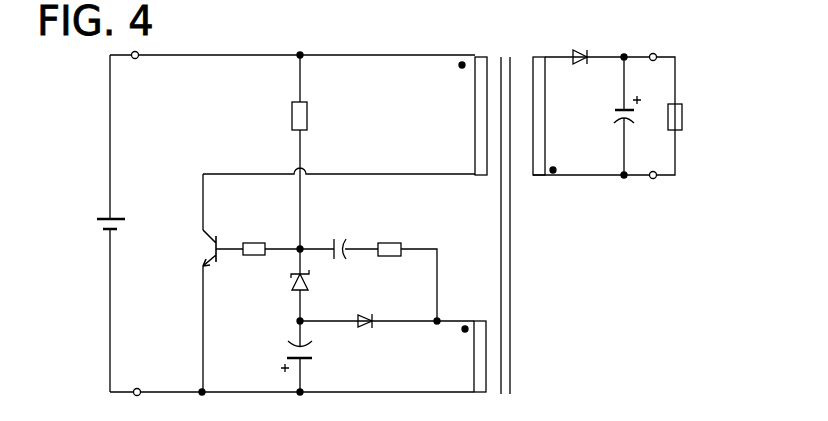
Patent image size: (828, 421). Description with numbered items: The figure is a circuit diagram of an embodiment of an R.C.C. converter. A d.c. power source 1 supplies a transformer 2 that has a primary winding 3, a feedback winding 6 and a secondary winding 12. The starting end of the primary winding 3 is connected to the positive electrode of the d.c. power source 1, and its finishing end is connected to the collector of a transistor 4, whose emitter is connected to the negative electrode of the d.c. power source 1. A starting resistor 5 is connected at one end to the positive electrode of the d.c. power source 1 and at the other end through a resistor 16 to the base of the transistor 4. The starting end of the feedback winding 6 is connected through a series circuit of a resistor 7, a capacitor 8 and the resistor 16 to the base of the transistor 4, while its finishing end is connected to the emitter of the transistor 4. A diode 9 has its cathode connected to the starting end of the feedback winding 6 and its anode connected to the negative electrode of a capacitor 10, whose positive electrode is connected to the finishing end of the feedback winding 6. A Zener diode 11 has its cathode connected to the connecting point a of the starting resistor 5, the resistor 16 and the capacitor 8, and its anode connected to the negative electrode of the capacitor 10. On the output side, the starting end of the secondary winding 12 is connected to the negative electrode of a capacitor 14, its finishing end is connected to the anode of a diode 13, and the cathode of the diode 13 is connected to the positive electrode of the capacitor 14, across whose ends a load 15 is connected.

The d.c. power source 1 is at (116, 216).
The transformer 2 is at (506, 56).
The primary winding 3 is at (480, 56).
The transistor 4 is at (218, 240).
The starting resistor 5 is at (308, 116).
The feedback winding 6 is at (480, 393).
The resistor 7 is at (392, 243).
The capacitor 8 is at (342, 237).
The diode 9 is at (367, 328).
The capacitor 10 is at (312, 352).
The Zener diode 11 is at (290, 285).
The secondary winding 12 is at (540, 176).
The diode 13 is at (582, 50).
The capacitor 14 is at (612, 118).
The load 15 is at (683, 122).
The resistor 16 is at (260, 242).
The connecting point a is at (302, 246).